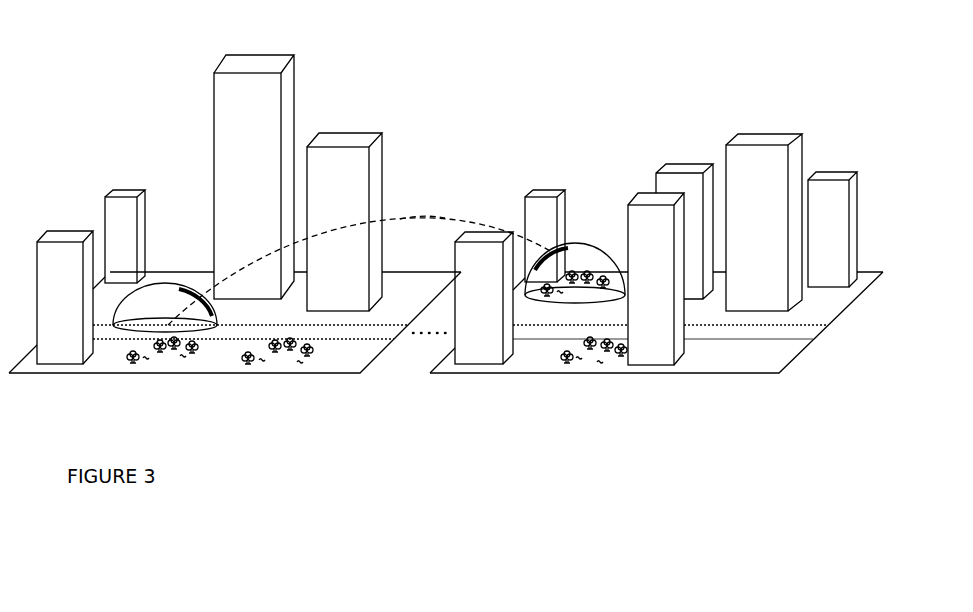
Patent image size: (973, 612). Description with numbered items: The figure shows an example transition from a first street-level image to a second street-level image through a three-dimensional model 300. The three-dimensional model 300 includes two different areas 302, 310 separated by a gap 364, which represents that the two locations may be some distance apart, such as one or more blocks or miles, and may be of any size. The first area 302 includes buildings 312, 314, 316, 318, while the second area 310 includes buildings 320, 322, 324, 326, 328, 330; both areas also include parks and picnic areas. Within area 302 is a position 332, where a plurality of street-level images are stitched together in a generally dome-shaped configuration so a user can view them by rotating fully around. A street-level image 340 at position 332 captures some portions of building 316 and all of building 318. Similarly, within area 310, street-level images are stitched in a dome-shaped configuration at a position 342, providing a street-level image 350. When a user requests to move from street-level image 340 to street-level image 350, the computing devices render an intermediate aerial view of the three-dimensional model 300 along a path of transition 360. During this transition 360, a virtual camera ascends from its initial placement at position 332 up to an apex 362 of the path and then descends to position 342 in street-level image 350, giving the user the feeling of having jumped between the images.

The 3D model 300 is at (471, 255).
The area 302 is at (80, 404).
The area 310 is at (470, 404).
The building 312 is at (65, 287).
The building 314 is at (105, 206).
The building 316 is at (213, 92).
The building 318 is at (382, 158).
The building 320 is at (472, 298).
The building 322 is at (642, 279).
The building 324 is at (545, 227).
The building 326 is at (655, 183).
The building 328 is at (802, 143).
The building 330 is at (858, 182).
The position 332 is at (162, 345).
The street-level image 340 is at (165, 307).
The position 342 is at (575, 288).
The street-level image 350 is at (575, 273).
The path of transition 360 is at (388, 222).
The apex 362 is at (433, 218).
The gap 364 is at (429, 343).